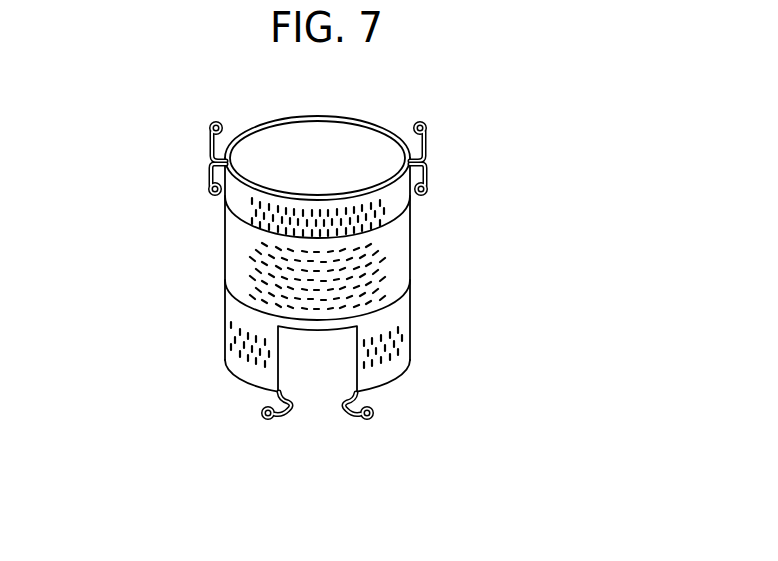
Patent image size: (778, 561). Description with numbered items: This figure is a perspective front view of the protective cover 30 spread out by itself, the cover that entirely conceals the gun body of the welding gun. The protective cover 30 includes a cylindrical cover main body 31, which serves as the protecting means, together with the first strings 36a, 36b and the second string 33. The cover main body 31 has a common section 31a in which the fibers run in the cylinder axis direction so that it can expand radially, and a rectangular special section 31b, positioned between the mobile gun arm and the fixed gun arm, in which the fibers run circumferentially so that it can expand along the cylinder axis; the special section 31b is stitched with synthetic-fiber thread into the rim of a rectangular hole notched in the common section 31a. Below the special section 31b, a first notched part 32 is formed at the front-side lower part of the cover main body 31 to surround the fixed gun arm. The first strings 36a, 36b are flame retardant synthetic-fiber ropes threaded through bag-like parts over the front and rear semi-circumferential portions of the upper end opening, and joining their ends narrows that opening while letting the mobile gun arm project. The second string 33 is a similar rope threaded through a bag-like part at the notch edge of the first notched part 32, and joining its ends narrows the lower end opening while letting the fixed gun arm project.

The protective cover 30 is at (428, 247).
The cover main body 31 is at (374, 307).
The common section 31a is at (386, 208).
The special section 31b is at (353, 292).
The first notched part 32 is at (356, 358).
The second string 33 is at (291, 408).
The first string 36a is at (210, 173).
The first string 36b is at (210, 147).